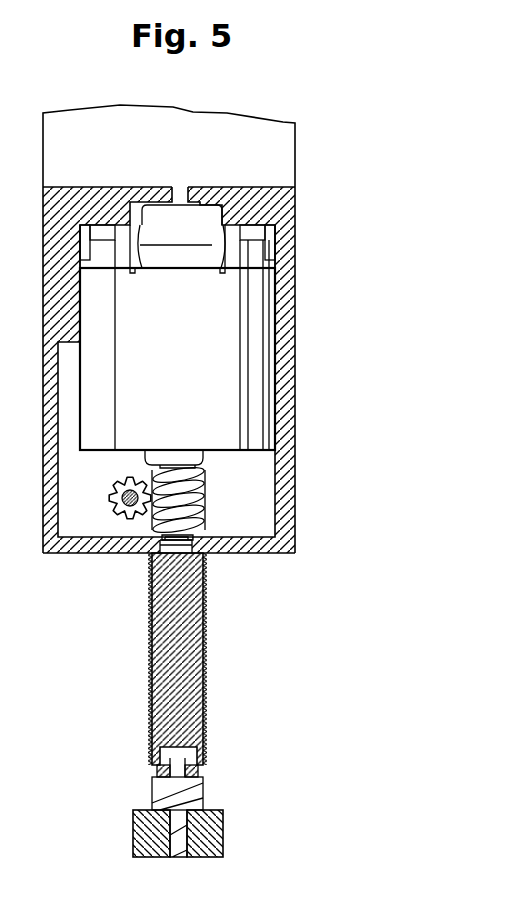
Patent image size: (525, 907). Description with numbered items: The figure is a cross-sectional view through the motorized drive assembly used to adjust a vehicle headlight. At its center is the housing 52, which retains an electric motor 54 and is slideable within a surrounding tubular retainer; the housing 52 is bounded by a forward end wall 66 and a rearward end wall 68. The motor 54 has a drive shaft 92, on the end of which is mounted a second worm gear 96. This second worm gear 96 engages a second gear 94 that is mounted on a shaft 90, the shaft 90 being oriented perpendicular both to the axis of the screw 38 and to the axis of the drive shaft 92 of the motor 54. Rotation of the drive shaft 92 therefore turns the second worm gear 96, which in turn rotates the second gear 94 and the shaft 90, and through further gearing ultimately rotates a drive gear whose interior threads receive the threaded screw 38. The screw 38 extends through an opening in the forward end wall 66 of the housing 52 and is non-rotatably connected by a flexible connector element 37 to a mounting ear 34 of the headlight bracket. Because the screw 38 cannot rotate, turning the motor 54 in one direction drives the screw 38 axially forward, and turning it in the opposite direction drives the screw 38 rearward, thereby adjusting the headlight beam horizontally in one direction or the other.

The mounting ear 34 is at (133, 837).
The flexible connector element 37 is at (152, 797).
The screw 38 is at (148, 640).
The housing 52 is at (300, 278).
The electric motor 54 is at (215, 383).
The forward end wall 66 is at (232, 552).
The rearward end wall 68 is at (247, 187).
The shaft 90 is at (118, 518).
The drive shaft 92 is at (197, 533).
The second gear 94 is at (103, 507).
The second worm gear 96 is at (207, 510).